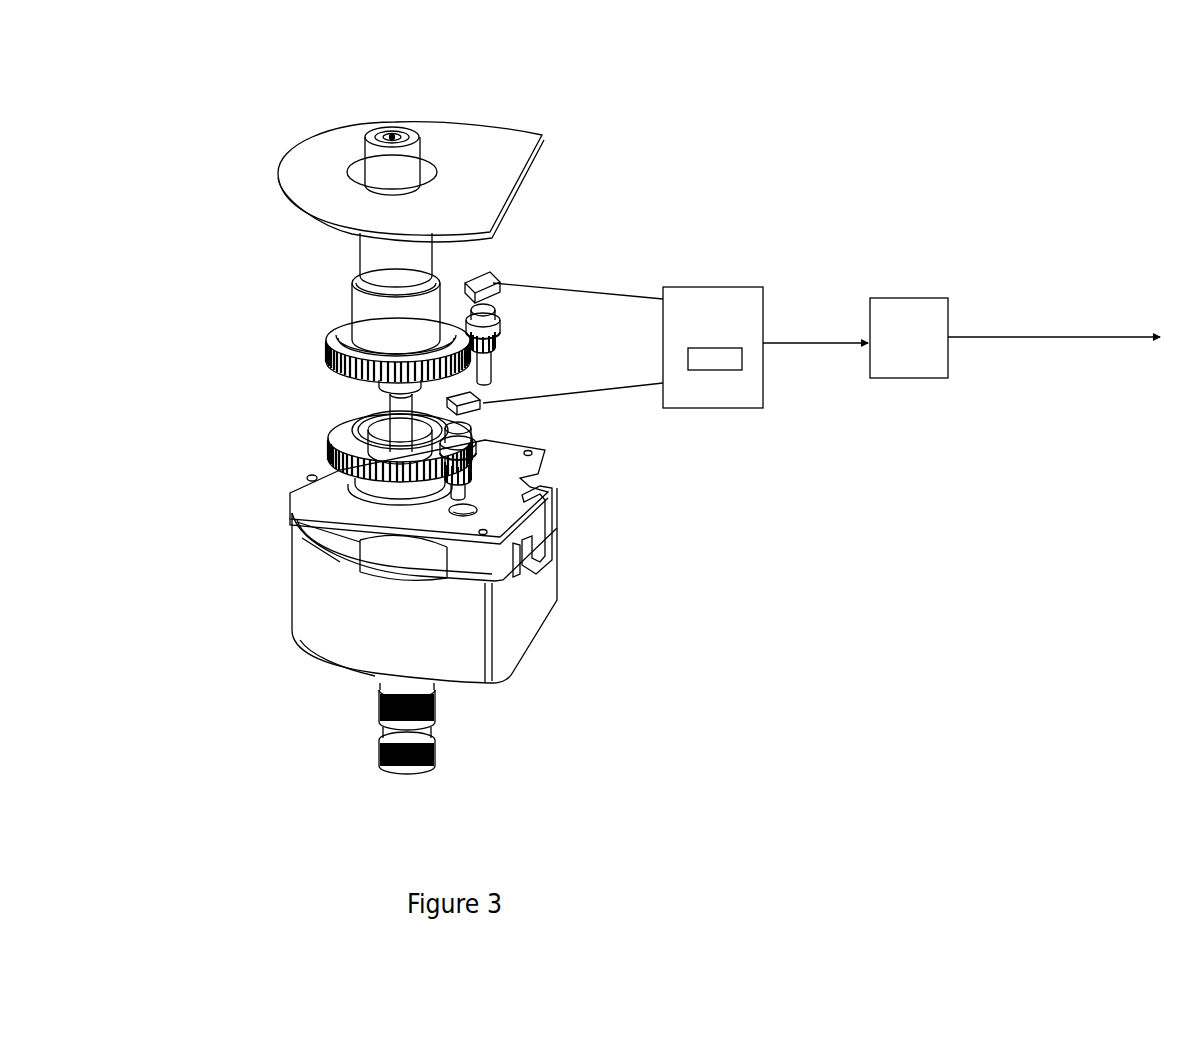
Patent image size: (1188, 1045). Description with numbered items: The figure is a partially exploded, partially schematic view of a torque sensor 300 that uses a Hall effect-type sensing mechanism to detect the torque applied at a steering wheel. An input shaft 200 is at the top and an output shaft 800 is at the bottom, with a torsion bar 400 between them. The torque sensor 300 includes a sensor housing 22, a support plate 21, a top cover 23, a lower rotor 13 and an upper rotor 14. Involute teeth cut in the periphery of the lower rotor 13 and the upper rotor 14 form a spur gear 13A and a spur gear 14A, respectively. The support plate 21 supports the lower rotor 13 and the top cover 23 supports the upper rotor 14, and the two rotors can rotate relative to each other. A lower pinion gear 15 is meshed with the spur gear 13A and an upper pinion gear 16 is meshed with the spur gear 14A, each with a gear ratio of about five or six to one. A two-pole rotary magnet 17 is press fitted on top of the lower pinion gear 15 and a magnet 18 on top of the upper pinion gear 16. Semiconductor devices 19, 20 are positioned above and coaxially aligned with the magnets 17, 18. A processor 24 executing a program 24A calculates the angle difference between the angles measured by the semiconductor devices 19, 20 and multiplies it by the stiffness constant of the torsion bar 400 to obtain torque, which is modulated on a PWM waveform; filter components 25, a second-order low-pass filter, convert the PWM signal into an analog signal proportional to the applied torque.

The torque sensor 300 is at (168, 295).
The input shaft 200 is at (415, 140).
The top cover 23 is at (541, 128).
The upper rotor 14 is at (343, 294).
The spur gear of the upper rotor 14A is at (330, 351).
The torsion bar 400 is at (368, 403).
The processing semiconductor device 20 is at (503, 278).
The magnet 18 is at (494, 305).
The upper pinion gear 16 is at (500, 347).
The processing semiconductor device 19 is at (487, 405).
The magnet 17 is at (482, 458).
The spur gear of the lower rotor 13A is at (320, 448).
The lower rotor 13 is at (352, 483).
The lower pinion gear 15 is at (523, 522).
The support plate 21 is at (297, 515).
The sensor housing 22 is at (534, 608).
The output shaft 800 is at (440, 733).
The processor 24 is at (741, 411).
The program 24A is at (751, 368).
The electrical signal filter components 25 is at (913, 296).